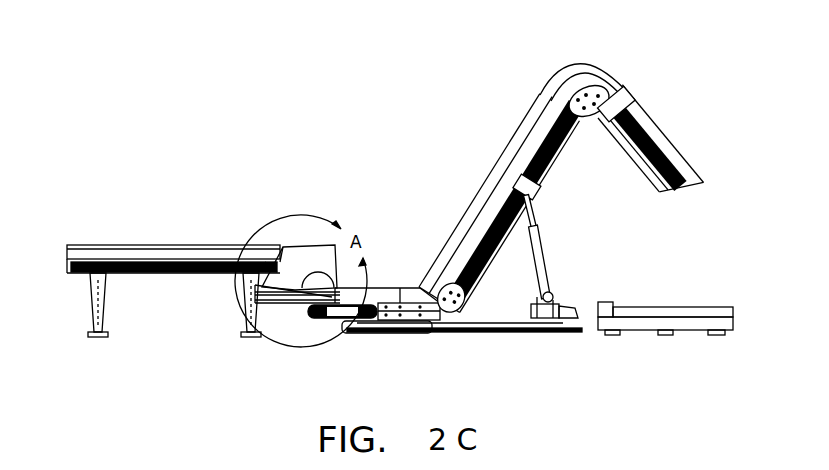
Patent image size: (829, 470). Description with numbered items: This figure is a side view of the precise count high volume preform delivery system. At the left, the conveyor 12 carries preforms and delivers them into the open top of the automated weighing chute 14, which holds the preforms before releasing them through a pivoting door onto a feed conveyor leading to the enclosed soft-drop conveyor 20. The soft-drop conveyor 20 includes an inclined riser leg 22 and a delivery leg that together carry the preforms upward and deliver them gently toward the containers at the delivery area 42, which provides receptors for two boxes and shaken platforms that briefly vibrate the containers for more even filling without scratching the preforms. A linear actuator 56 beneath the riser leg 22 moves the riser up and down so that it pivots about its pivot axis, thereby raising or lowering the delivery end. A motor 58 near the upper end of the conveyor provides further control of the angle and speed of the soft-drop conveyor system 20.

The conveyor 12 is at (138, 245).
The automated weighing chute 14 is at (313, 253).
The enclosed soft-drop conveyor 20 is at (496, 142).
The riser leg 22 is at (472, 227).
The delivery area 42 is at (645, 334).
The linear actuator 56 is at (553, 244).
The motor 58 is at (636, 85).